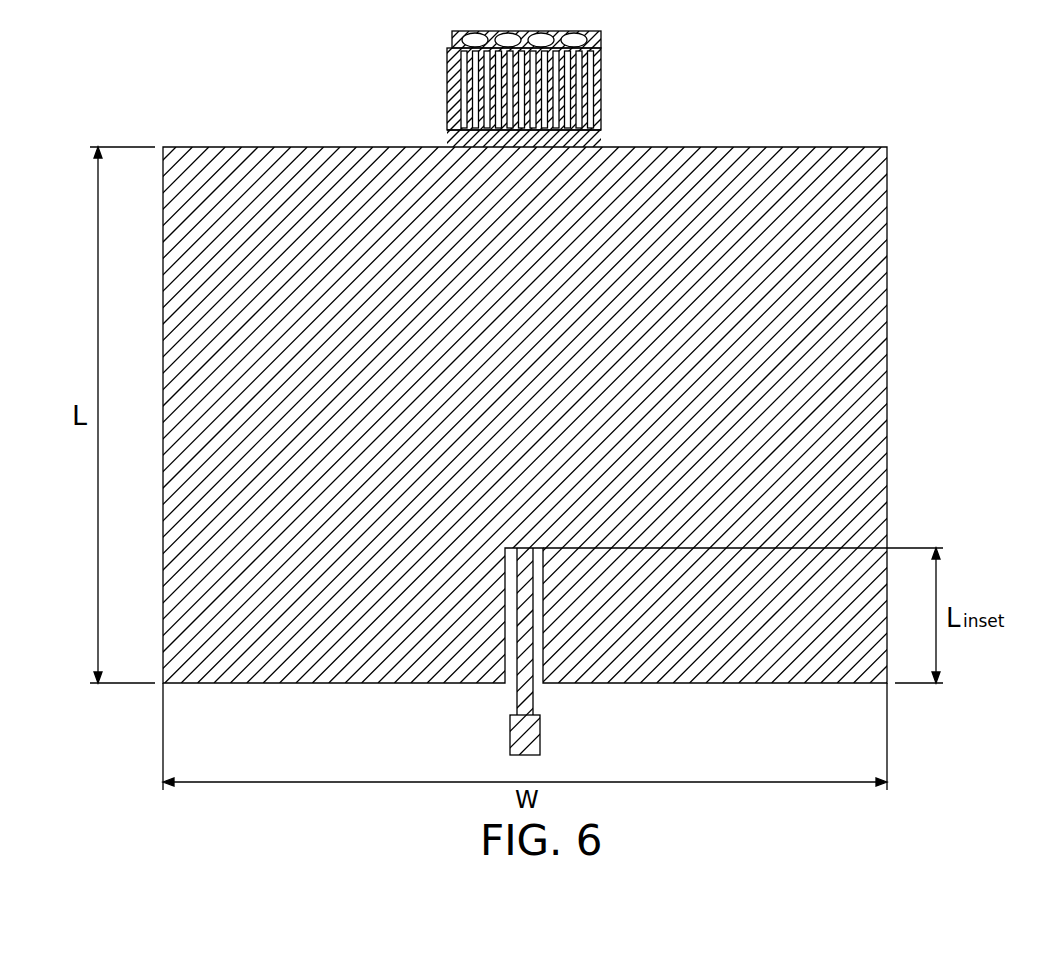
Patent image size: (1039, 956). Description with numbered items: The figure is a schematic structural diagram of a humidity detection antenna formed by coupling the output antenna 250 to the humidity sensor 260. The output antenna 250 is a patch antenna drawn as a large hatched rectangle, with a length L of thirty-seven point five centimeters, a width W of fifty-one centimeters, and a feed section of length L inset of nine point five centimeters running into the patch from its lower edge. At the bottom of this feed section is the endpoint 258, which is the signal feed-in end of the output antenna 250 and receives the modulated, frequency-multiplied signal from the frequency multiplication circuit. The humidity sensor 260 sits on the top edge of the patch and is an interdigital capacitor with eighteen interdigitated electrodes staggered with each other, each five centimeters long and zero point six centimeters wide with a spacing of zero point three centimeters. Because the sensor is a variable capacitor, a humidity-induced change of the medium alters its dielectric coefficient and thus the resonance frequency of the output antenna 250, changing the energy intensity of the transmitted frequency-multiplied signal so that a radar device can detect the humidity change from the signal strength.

The output antenna 250 is at (880, 252).
The endpoint 258 is at (540, 733).
The humidity sensor 260 is at (606, 52).